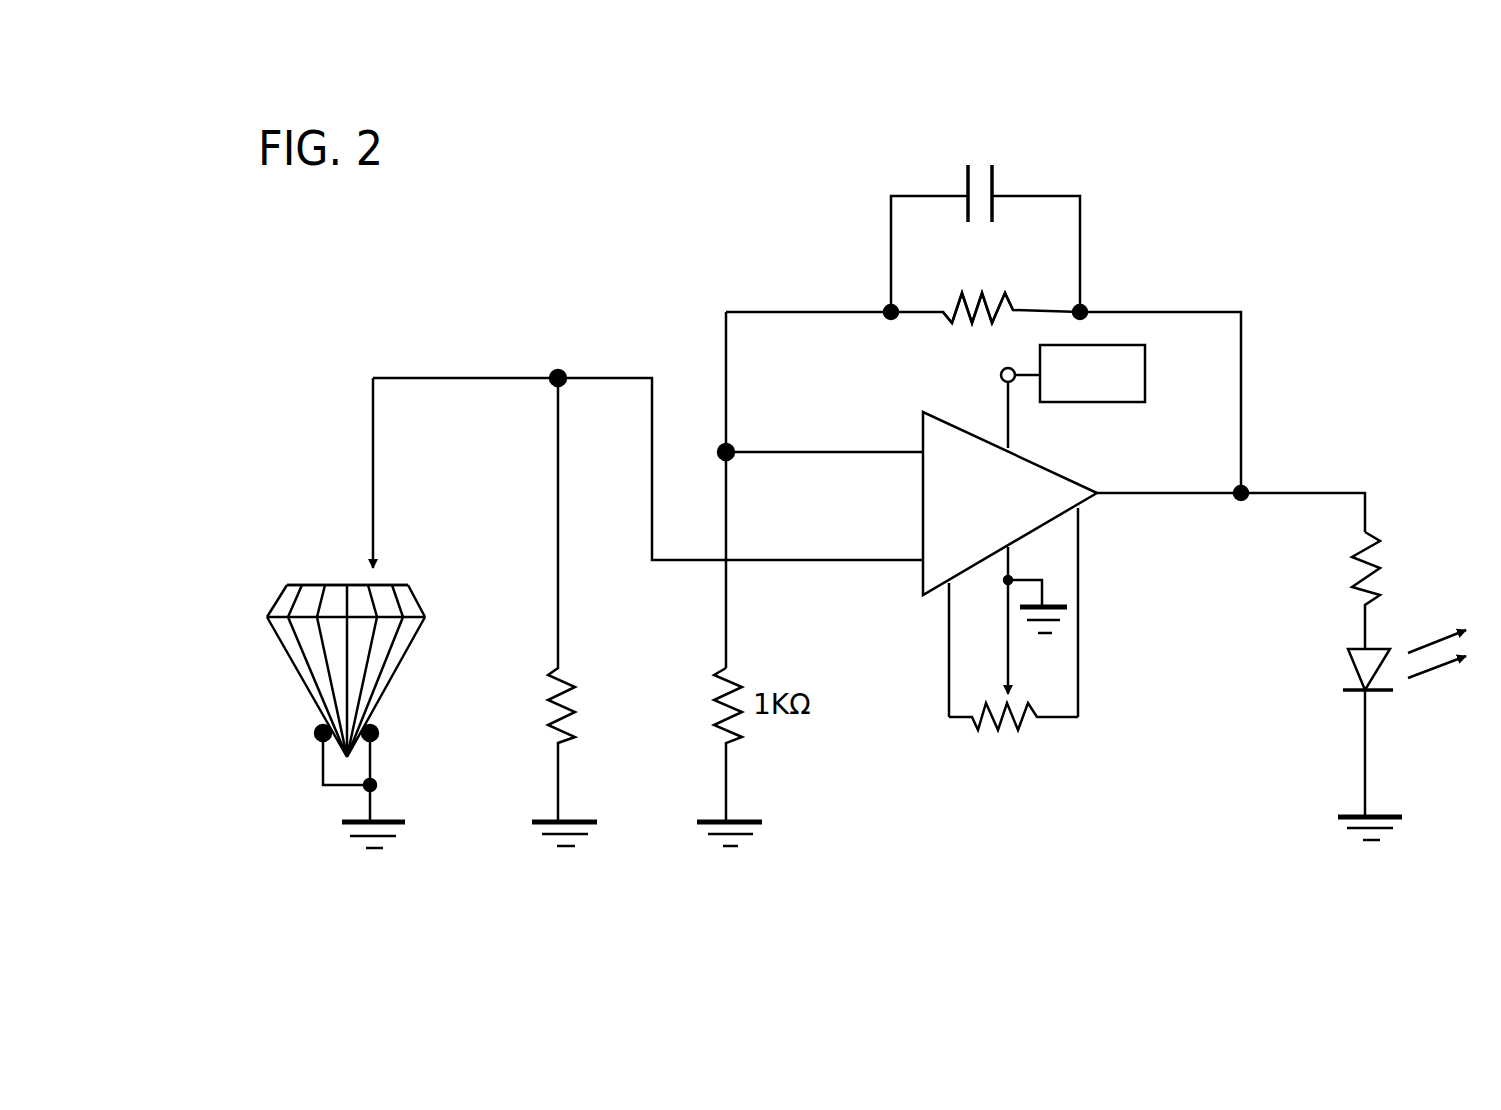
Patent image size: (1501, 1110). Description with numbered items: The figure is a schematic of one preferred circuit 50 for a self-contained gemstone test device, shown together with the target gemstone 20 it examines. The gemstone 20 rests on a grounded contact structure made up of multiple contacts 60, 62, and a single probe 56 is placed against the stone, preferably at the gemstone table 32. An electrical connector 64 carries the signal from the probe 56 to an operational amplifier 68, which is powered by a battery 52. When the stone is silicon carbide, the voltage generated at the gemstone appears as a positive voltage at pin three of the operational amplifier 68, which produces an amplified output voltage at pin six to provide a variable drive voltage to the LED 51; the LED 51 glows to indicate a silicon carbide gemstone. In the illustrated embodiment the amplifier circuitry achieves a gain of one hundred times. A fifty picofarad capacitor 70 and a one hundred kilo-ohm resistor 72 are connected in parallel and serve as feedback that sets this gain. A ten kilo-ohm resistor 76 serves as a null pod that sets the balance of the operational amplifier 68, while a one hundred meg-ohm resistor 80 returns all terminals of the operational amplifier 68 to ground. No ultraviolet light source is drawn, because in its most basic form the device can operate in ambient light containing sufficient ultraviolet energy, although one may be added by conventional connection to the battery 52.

The target gemstone 20 is at (310, 642).
The gemstone table 32 is at (298, 583).
The circuit 50 is at (670, 277).
The LED 51 is at (1350, 655).
The battery 52 is at (1147, 363).
The probe 56 is at (378, 573).
The contact 60 is at (317, 737).
The contact 62 is at (377, 728).
The electrical connector 64 is at (438, 378).
The operational amplifier 68 is at (938, 418).
The capacitor 70 is at (967, 173).
The resistor 72 is at (995, 317).
The resistor 76 is at (1027, 722).
The resistor 80 is at (568, 707).